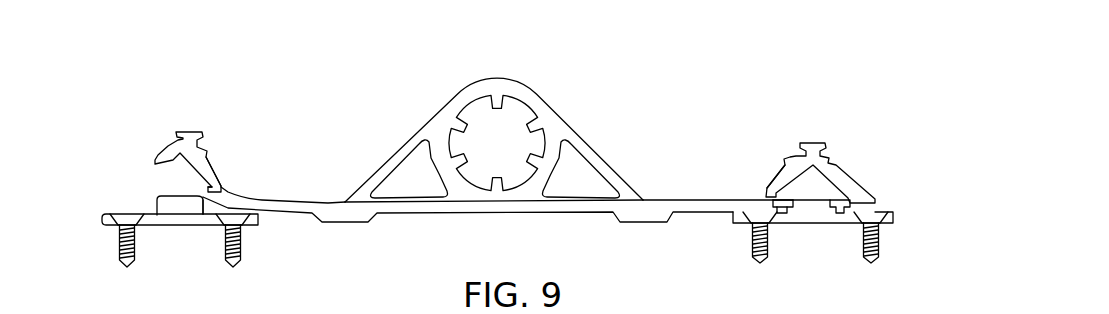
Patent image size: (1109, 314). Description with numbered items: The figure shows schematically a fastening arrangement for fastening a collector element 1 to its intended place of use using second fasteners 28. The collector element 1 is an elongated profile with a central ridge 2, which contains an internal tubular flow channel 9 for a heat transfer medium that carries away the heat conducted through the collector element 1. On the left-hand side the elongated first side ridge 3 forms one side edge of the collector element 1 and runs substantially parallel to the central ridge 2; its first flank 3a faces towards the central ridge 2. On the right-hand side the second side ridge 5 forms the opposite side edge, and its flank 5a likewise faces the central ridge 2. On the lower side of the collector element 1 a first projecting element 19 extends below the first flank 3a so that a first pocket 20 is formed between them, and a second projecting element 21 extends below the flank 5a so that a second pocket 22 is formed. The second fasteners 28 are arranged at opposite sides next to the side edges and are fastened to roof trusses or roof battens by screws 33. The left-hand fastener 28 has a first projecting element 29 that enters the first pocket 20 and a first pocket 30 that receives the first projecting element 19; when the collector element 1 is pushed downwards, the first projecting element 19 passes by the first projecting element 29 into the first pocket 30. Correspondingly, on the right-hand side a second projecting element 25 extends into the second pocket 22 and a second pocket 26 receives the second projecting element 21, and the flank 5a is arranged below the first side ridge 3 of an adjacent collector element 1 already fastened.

The collector element 1 is at (648, 57).
The central ridge 2 is at (552, 128).
The first side ridge 3 is at (200, 112).
The first flank 3a is at (214, 178).
The second side ridge 5 is at (768, 178).
The flank 5a is at (773, 188).
The internal tubular flow channel 9 is at (508, 156).
The first projecting element 19 is at (203, 190).
The first pocket 20 is at (208, 192).
The second projecting element 21 is at (786, 209).
The second pocket 22 is at (779, 196).
The second projecting element 25 is at (795, 201).
The second pocket 26 is at (788, 210).
The second fastener 28 is at (175, 216).
The first projecting element 29 is at (203, 193).
The first pocket 30 is at (202, 216).
The screws 33 is at (120, 250).